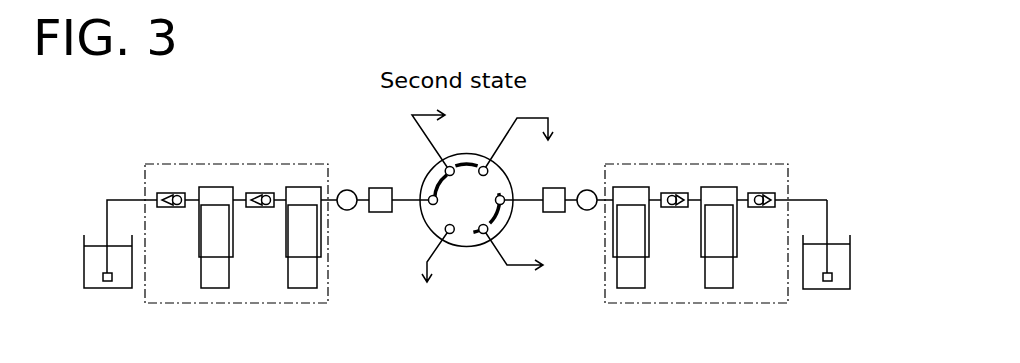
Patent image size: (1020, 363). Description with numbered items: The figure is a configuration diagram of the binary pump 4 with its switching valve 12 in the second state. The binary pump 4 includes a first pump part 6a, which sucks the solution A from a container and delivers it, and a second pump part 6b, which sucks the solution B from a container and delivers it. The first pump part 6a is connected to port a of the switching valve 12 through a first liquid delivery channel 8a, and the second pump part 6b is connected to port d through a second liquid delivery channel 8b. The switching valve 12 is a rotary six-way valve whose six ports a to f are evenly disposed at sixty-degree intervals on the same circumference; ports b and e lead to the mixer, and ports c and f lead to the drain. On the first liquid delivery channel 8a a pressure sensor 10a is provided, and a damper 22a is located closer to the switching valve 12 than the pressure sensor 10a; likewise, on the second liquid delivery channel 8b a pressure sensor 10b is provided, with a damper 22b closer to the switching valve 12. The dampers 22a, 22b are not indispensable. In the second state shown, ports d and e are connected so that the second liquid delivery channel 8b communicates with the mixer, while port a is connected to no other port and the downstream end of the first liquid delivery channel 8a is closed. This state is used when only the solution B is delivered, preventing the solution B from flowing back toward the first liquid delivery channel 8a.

The binary pump 4 is at (666, 113).
The first pump part 6a is at (245, 163).
The second pump part 6b is at (707, 162).
The pressure sensor 10a is at (345, 189).
The pressure sensor 10b is at (587, 189).
The damper 22a is at (387, 188).
The damper 22b is at (551, 188).
The first liquid delivery channel 8a is at (404, 204).
The second liquid delivery channel 8b is at (529, 204).
The switching valve 12 is at (468, 248).